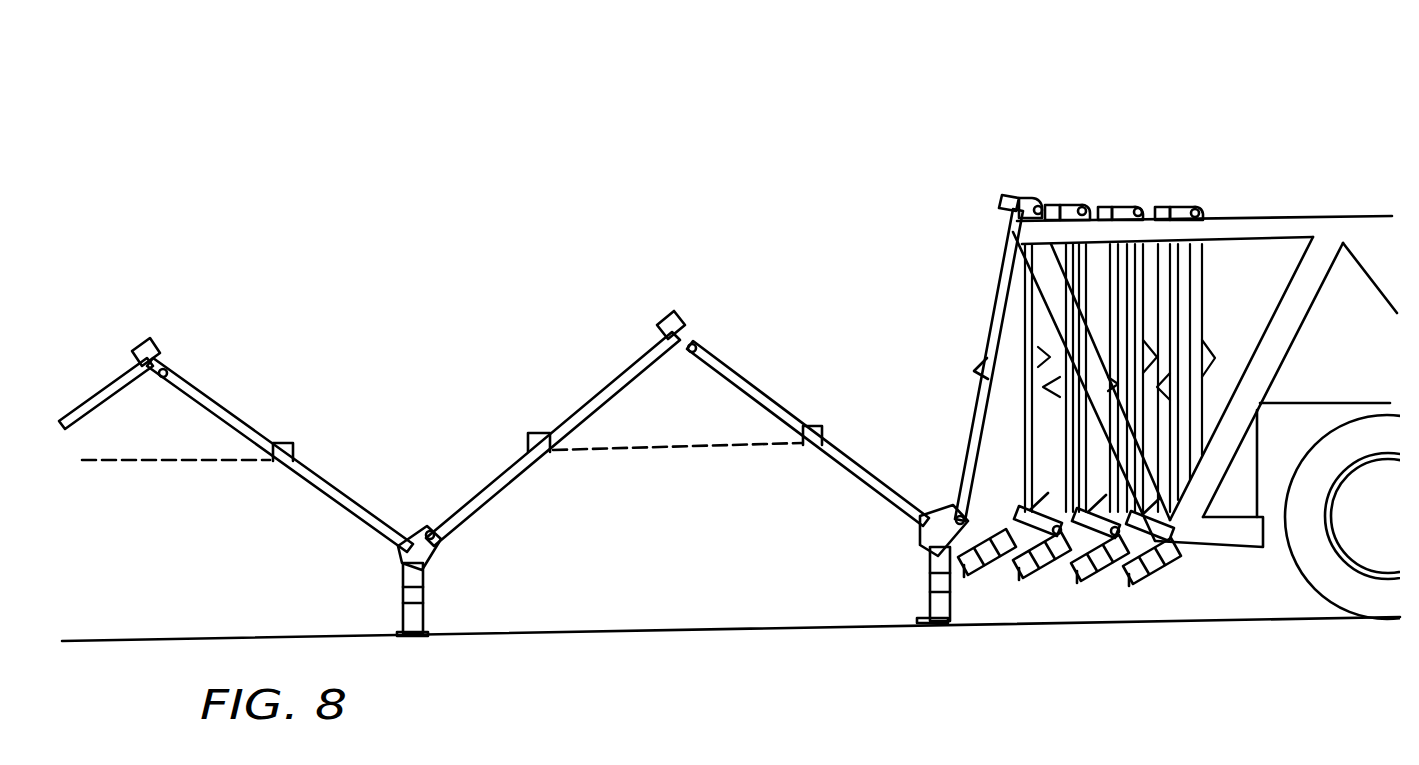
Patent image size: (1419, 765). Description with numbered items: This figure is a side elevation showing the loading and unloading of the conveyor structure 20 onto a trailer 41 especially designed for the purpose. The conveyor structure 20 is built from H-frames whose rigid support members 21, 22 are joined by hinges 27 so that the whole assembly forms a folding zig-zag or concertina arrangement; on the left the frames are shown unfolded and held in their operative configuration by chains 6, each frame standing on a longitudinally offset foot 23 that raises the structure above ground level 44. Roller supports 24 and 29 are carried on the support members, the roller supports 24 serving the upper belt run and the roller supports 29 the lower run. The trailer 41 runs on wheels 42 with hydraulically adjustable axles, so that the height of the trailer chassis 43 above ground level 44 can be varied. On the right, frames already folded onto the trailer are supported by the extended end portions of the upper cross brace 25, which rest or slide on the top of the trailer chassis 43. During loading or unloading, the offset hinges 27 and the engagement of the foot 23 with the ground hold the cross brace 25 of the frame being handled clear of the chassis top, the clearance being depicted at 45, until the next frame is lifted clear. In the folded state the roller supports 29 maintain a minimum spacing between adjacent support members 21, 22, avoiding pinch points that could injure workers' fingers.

The chain 6 is at (682, 447).
The conveyor structure 20 is at (566, 311).
The support member 21 is at (837, 480).
The support member 22 is at (500, 488).
The foot 23 is at (915, 597).
The roller support 24 is at (287, 443).
The upper cross-brace 25 is at (1102, 207).
The hinge 27 is at (168, 370).
The roller support 29 is at (403, 537).
The trailer 41 is at (1276, 183).
The wheel 42 is at (1328, 450).
The trailer chassis 43 is at (1216, 535).
The ground level 44 is at (610, 633).
The clearance 45 is at (988, 200).